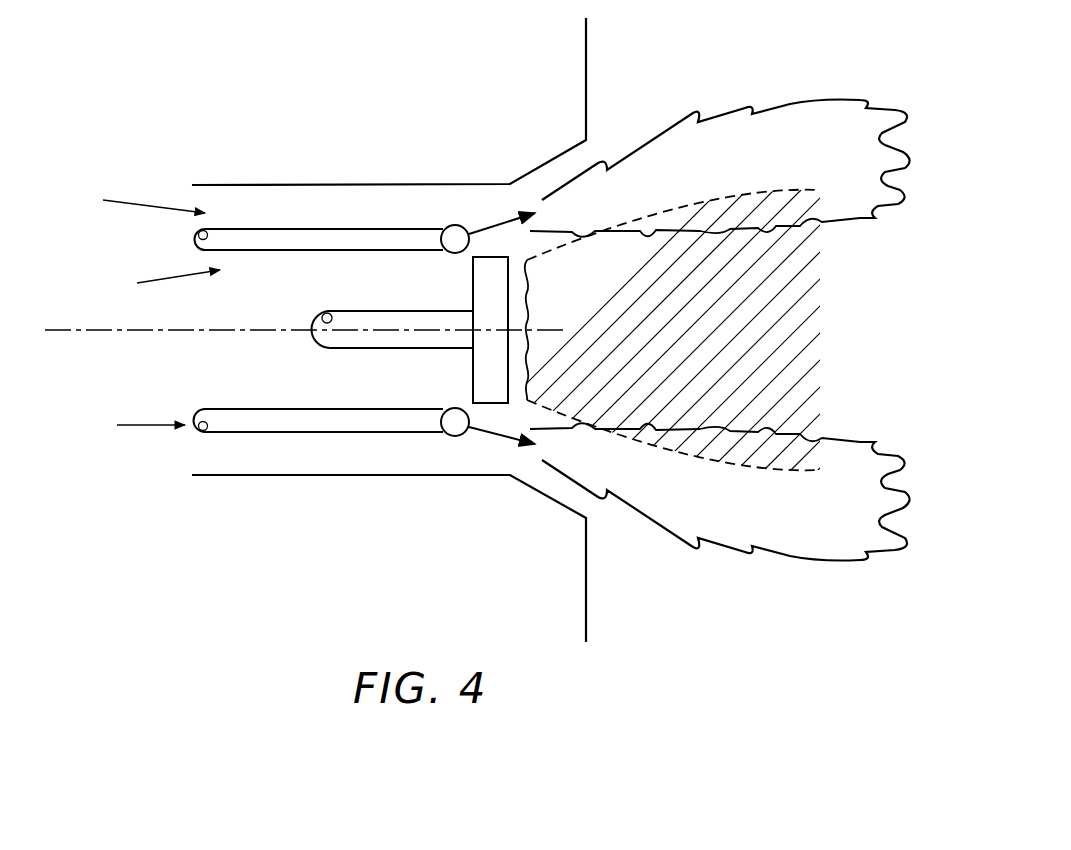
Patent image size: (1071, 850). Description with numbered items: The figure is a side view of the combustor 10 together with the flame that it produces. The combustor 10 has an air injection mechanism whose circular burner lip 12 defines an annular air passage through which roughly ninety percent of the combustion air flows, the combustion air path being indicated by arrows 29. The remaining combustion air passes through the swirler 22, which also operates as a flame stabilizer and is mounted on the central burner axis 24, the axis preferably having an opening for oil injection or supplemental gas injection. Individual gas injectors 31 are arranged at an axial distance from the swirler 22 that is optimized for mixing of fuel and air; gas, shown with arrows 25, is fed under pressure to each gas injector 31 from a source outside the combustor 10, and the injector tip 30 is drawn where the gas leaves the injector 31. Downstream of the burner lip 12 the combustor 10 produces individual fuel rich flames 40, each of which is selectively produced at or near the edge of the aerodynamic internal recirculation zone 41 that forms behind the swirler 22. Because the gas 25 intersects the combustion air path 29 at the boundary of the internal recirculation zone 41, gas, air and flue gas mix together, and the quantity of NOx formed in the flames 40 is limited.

The combustor 10 is at (703, 80).
The circular burner lip 12 is at (560, 153).
The swirler 22 is at (410, 330).
The central burner axis 24 is at (306, 353).
The gas 25 is at (497, 227).
The combustion air path 29 is at (147, 307).
The fuel nozzle tip 30 is at (437, 315).
The gas injector 31 is at (318, 315).
The fuel rich flame 40 is at (792, 158).
The internal recirculation zone 41 is at (778, 196).